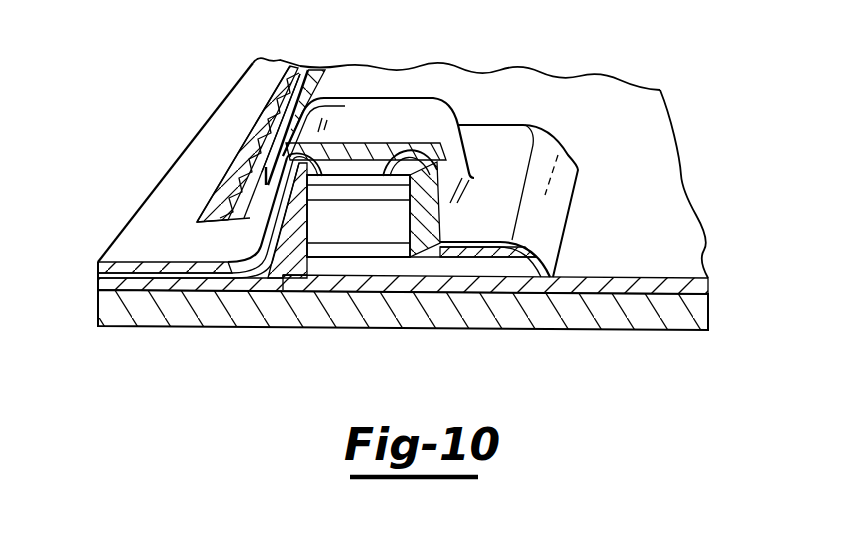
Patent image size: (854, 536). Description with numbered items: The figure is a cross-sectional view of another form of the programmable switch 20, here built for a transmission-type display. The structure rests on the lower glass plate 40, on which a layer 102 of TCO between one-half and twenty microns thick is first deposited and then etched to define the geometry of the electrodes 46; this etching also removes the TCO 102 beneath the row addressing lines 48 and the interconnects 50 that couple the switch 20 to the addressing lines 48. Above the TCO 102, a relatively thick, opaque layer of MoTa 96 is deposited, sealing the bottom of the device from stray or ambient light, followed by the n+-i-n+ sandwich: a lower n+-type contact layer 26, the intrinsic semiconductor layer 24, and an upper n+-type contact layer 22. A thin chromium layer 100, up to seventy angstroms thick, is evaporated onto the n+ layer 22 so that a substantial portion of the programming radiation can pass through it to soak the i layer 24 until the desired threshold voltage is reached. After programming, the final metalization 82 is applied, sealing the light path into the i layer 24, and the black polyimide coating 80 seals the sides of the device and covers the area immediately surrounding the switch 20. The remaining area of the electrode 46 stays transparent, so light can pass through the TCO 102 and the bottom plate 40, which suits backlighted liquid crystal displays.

The programmable switch 20 is at (470, 112).
The n+-type semiconductor contact layer 22 is at (320, 200).
The intrinsic semiconductor material layer 24 is at (317, 229).
The n+-type semiconductor contact layer 26 is at (328, 247).
The lower glass plate 40 is at (612, 325).
The lower electrode 46 is at (637, 121).
The row addressing line 48 is at (192, 129).
The interconnect 50 is at (190, 256).
The black polyimide coating 80 is at (98, 277).
The metalization 82 is at (98, 268).
The MoTa layer 96 is at (377, 267).
The chromium layer 100 is at (335, 178).
The TCO layer 102 is at (710, 287).